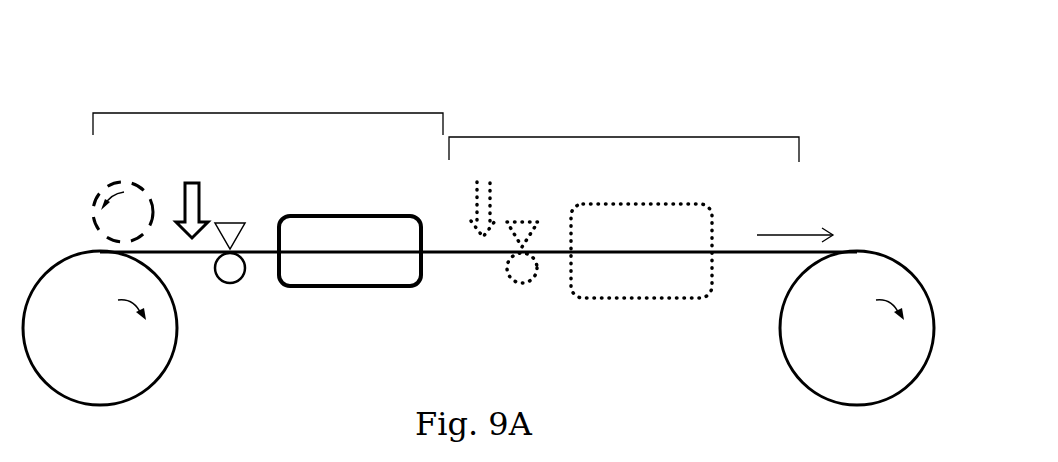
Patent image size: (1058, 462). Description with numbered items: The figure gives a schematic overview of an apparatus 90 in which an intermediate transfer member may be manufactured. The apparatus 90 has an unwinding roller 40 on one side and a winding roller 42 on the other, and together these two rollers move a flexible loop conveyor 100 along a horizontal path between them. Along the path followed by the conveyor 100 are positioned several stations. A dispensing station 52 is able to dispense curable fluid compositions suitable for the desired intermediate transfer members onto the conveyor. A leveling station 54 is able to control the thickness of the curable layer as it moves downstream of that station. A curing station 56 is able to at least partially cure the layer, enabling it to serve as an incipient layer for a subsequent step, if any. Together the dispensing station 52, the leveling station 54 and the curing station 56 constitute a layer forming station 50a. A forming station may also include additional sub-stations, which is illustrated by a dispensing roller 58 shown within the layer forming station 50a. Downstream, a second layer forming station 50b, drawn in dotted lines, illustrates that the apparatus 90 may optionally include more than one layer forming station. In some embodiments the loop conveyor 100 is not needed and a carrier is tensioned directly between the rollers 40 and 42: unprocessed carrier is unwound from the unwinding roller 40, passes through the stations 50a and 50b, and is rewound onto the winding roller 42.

The flexible loop conveyor 100 is at (60, 260).
The unwinding roller 40 is at (114, 341).
The winding roller 42 is at (871, 341).
The dispensing roller 58 is at (128, 182).
The dispensing station 52 is at (190, 180).
The leveling station 54 is at (232, 219).
The curing station 56 is at (338, 206).
The layer forming station 50a is at (268, 113).
The layer forming station 50b is at (623, 137).
The apparatus 90 is at (840, 102).